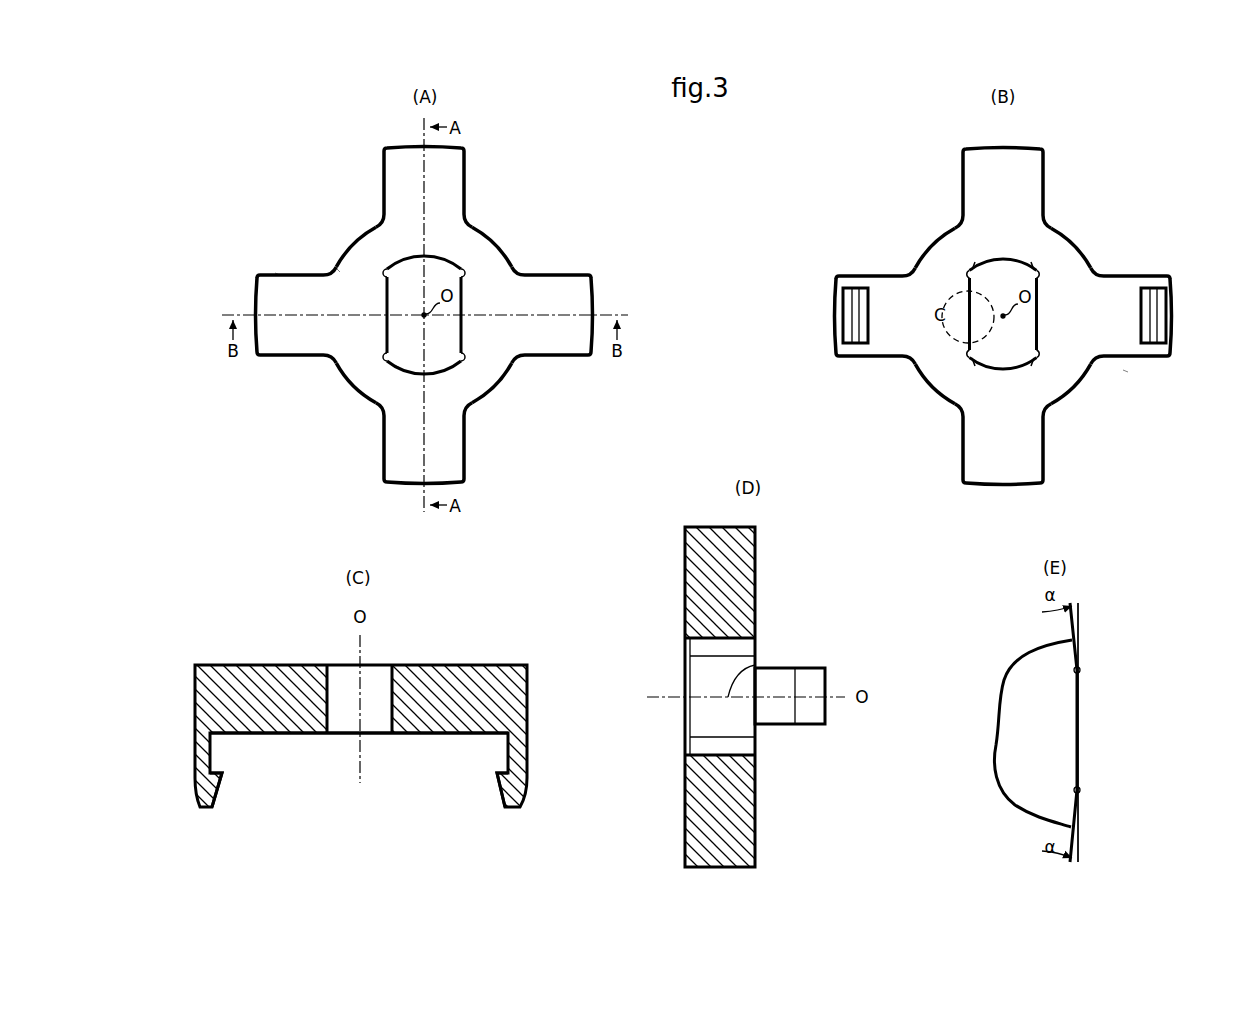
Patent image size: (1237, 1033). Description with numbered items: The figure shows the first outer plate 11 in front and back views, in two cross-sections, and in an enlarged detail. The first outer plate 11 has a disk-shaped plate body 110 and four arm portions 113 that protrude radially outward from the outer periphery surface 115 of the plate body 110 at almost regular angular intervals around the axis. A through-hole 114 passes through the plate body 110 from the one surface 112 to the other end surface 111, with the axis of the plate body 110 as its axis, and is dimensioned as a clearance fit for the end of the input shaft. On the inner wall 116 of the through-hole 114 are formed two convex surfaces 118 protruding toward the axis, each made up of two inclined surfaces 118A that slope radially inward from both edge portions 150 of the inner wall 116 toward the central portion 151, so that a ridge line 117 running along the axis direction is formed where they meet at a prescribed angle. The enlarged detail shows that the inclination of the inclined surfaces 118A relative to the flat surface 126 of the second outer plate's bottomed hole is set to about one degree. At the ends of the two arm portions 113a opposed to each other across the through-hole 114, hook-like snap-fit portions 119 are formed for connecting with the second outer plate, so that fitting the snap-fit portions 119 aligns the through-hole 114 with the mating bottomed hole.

The first outer plate 11 is at (566, 124).
The plate body 110 is at (506, 252).
The other end surface 111 is at (358, 250).
The one surface 112 is at (940, 257).
The arm portion 113 is at (466, 172).
The arm portion 113a is at (272, 268).
The through-hole 114 is at (433, 357).
The outer periphery surface 115 is at (337, 270).
The inner wall 116 is at (394, 363).
The ridge line 117 is at (390, 312).
The convex surface 118 is at (464, 292).
The inclined surface 118A is at (391, 268).
The snap-fit portion 119 is at (836, 301).
The flat surface 126 is at (1078, 626).
The edge portion 150 is at (975, 263).
The central portion 151 is at (965, 310).